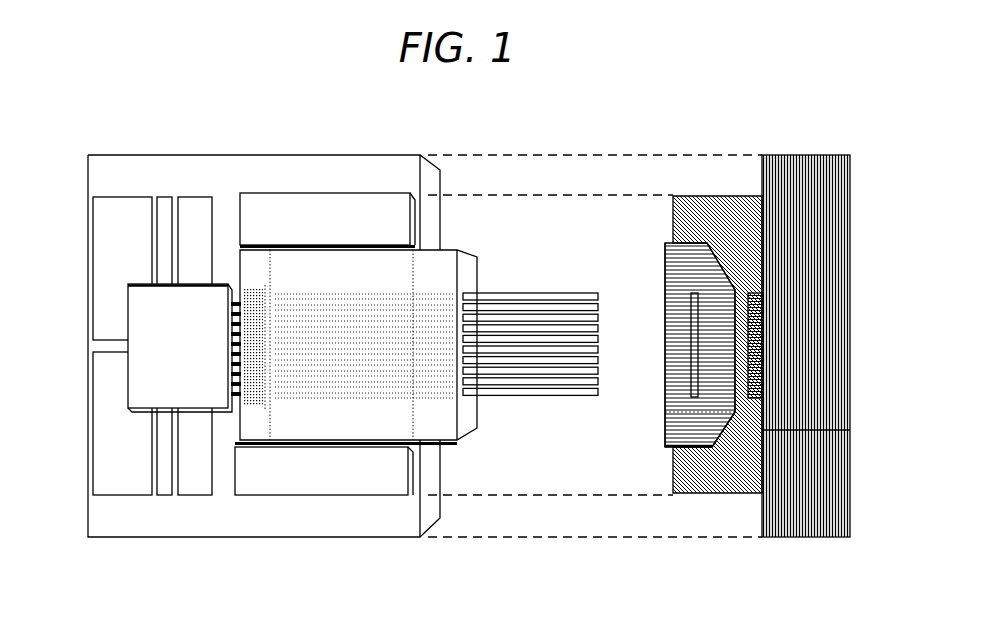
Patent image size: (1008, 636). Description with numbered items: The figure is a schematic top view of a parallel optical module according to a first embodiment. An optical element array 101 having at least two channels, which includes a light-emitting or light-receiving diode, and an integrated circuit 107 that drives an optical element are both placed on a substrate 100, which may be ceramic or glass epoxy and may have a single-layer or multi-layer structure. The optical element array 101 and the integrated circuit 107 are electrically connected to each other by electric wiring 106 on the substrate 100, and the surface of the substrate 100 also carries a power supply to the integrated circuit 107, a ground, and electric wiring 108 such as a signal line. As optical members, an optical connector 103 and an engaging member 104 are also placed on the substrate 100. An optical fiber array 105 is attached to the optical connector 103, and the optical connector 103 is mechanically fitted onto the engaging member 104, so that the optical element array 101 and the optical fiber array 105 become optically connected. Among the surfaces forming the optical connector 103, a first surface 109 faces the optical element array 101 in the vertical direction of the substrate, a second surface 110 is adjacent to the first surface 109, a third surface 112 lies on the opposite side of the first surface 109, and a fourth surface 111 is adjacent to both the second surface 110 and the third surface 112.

The substrate 100 is at (287, 168).
The optical element array 101 is at (253, 298).
The optical connector 103 is at (450, 242).
The engaging member 104 is at (323, 478).
The optical fiber array 105 is at (697, 332).
The electric wiring 106 is at (227, 413).
The integrated circuit 107 is at (162, 368).
The electric wiring 108 is at (124, 233).
The first surface 109 is at (720, 390).
The second surface 110 is at (717, 266).
The fourth surface 111 is at (668, 251).
The third surface 112 is at (688, 432).